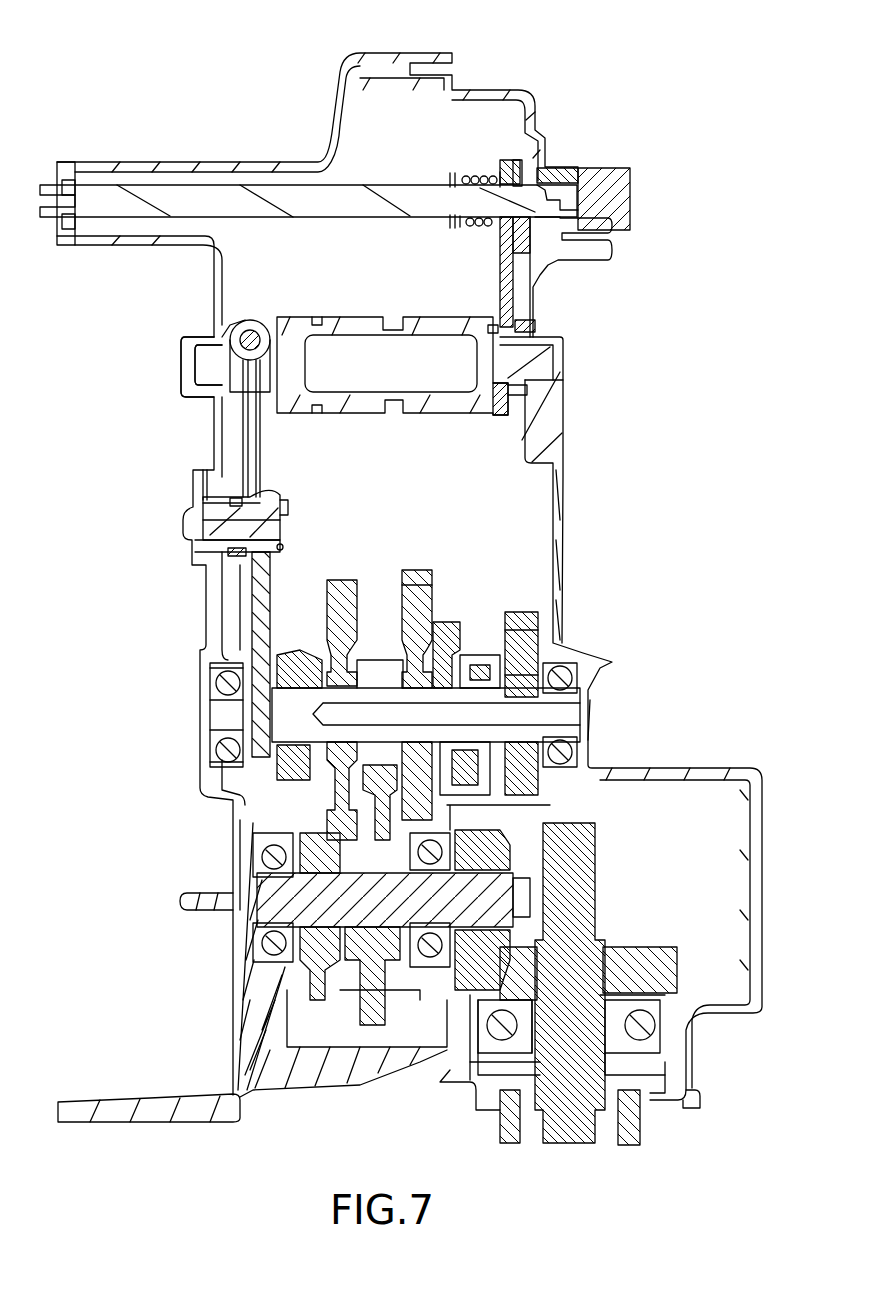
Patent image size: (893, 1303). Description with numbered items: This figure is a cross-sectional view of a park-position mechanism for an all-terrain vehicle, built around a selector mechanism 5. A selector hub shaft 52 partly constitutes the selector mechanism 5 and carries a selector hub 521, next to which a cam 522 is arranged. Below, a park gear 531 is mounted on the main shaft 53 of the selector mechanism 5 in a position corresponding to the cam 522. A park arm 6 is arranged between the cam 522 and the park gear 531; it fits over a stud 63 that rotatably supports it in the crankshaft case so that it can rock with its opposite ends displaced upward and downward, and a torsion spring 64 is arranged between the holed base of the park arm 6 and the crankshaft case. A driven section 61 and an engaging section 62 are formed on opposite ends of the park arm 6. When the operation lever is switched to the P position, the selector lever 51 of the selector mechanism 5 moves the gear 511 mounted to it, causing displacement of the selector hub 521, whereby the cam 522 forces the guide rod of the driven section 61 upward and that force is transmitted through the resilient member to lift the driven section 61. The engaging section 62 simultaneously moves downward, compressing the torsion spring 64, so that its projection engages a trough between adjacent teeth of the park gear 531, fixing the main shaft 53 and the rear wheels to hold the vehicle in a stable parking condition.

The selector mechanism 5 is at (409, 587).
The selector lever 51 is at (205, 180).
The gear 511 is at (520, 290).
The selector hub shaft 52 is at (555, 375).
The selector hub 521 is at (535, 327).
The cam 522 is at (192, 352).
The main shaft 53 is at (543, 713).
The park gear 531 is at (232, 745).
The park arm 6 is at (238, 430).
The driven section 61 is at (228, 340).
The engaging section 62 is at (262, 620).
The stud 63 is at (258, 495).
The torsion spring 64 is at (212, 560).